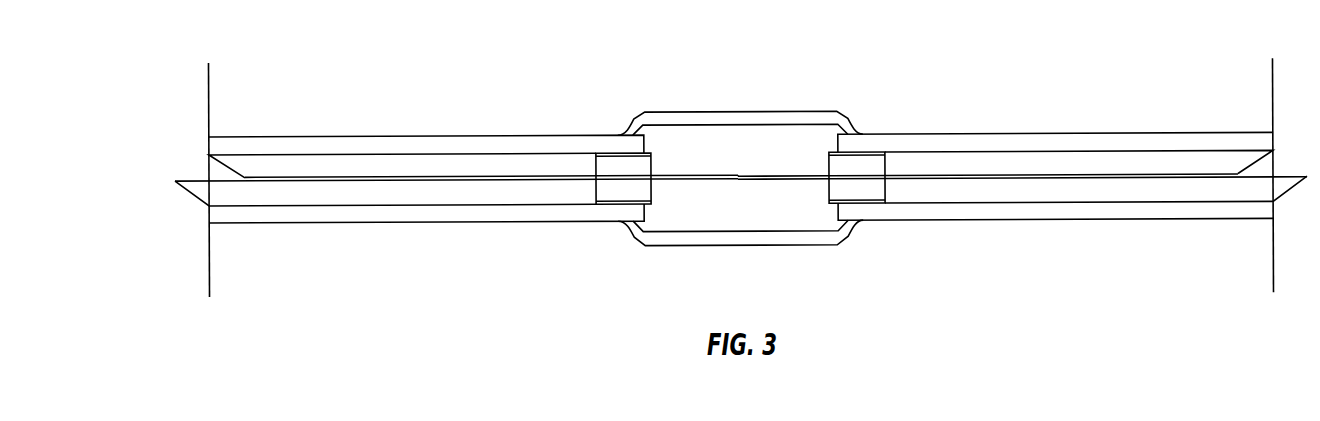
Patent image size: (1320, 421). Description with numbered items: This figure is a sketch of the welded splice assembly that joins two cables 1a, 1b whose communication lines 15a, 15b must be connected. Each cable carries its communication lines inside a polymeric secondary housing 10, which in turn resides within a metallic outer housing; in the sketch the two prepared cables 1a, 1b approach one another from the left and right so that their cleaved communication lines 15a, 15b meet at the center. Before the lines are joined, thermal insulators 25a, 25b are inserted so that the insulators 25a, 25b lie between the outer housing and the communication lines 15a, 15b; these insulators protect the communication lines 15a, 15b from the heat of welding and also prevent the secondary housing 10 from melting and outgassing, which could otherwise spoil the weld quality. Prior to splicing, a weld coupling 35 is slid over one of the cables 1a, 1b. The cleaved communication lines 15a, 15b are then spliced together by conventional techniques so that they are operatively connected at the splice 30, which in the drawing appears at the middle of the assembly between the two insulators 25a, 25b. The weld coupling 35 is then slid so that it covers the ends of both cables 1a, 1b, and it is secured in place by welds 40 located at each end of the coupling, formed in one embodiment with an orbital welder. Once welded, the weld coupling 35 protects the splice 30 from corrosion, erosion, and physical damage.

The cable 1a is at (330, 137).
The cable 1b is at (1042, 135).
The secondary housing 10 is at (325, 162).
The communication line 15a is at (707, 173).
The communication line 15b is at (817, 172).
The thermal insulator 25a is at (620, 154).
The thermal insulator 25b is at (862, 153).
The splice 30 is at (738, 182).
The weld coupling 35 is at (740, 118).
The weld 40 is at (622, 223).